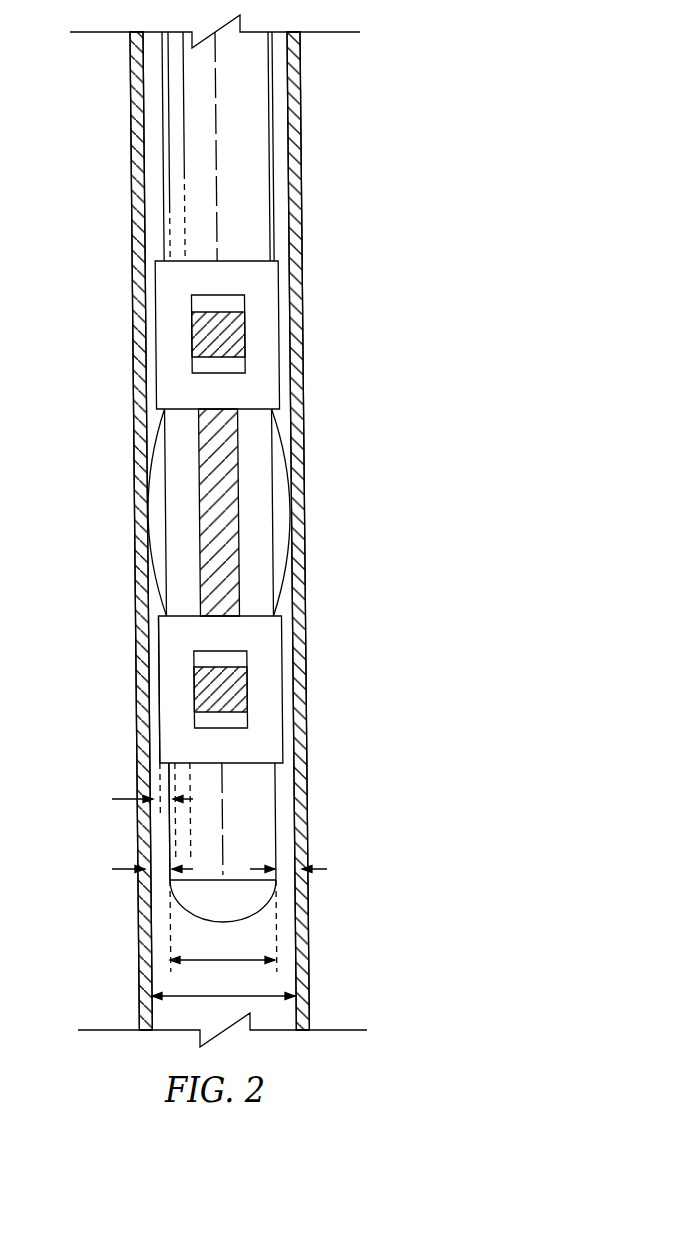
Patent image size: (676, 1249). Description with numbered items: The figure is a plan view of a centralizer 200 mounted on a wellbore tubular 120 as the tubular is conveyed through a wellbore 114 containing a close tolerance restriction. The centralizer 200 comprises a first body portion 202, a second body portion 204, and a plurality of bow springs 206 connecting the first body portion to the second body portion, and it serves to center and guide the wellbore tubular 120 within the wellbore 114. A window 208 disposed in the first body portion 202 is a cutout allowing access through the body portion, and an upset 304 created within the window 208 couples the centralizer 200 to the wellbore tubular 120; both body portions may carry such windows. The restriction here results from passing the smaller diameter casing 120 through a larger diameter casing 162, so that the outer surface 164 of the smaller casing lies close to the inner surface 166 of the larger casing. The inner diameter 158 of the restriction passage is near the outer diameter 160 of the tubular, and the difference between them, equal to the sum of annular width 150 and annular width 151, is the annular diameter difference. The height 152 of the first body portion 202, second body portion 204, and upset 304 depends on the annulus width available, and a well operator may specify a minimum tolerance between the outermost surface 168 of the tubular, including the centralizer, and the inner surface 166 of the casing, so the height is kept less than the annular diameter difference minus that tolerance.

The wellbore 114 is at (297, 152).
The centralizer 200 is at (121, 281).
The upset 304 is at (191, 298).
The window 208 is at (232, 297).
The second body portion 204 is at (280, 380).
The bow springs 206 is at (291, 583).
The first body portion 202 is at (283, 737).
The outermost surface 168 is at (160, 698).
The height 152 is at (136, 789).
The larger diameter casing 162 is at (308, 803).
The outer surface 164 is at (167, 838).
The wellbore tubular 120 is at (275, 845).
The annular width 150 is at (135, 869).
The annular width 151 is at (311, 869).
The inner surface 166 is at (157, 924).
The outer diameter 160 is at (233, 960).
The inner diameter 158 is at (253, 996).